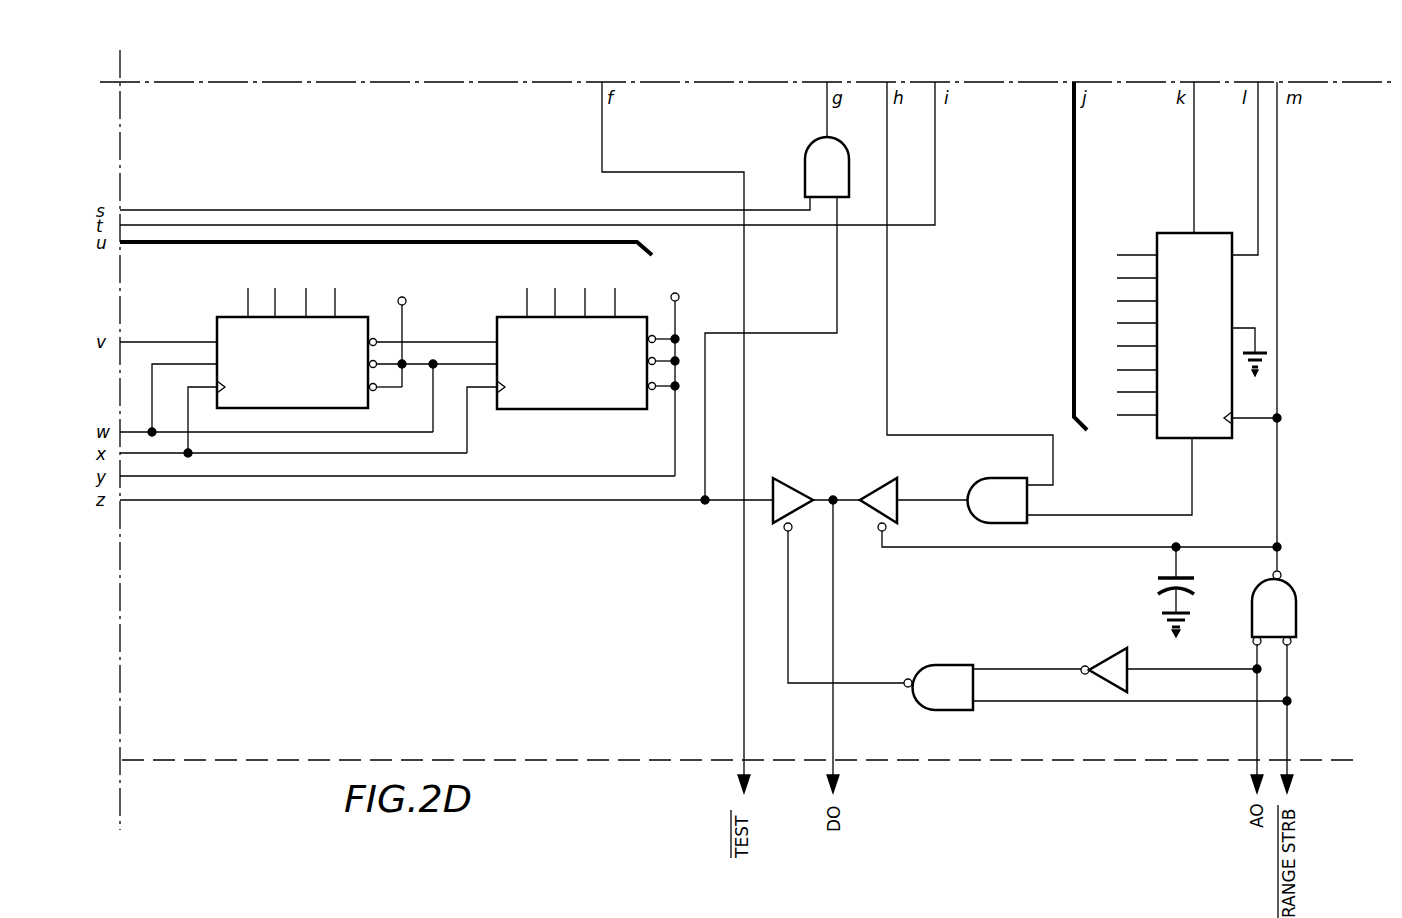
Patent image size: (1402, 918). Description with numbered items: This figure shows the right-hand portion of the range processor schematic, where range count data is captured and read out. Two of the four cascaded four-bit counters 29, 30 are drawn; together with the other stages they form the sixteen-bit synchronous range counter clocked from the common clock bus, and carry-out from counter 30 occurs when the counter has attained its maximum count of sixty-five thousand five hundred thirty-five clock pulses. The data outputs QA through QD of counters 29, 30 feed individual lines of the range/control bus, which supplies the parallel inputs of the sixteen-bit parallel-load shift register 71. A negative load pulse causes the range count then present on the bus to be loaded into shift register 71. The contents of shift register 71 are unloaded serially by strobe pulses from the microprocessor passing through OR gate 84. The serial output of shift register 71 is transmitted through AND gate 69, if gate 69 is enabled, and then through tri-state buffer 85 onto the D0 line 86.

The 4-bit counter 29 is at (346, 317).
The 4-bit counter 30 is at (510, 317).
The parallel-load shift register 71 is at (1292, 266).
The AND gate 69 is at (970, 488).
The tri-state buffer 85 is at (880, 488).
The OR gate 84 is at (1297, 604).
The D0 line 86 is at (836, 577).